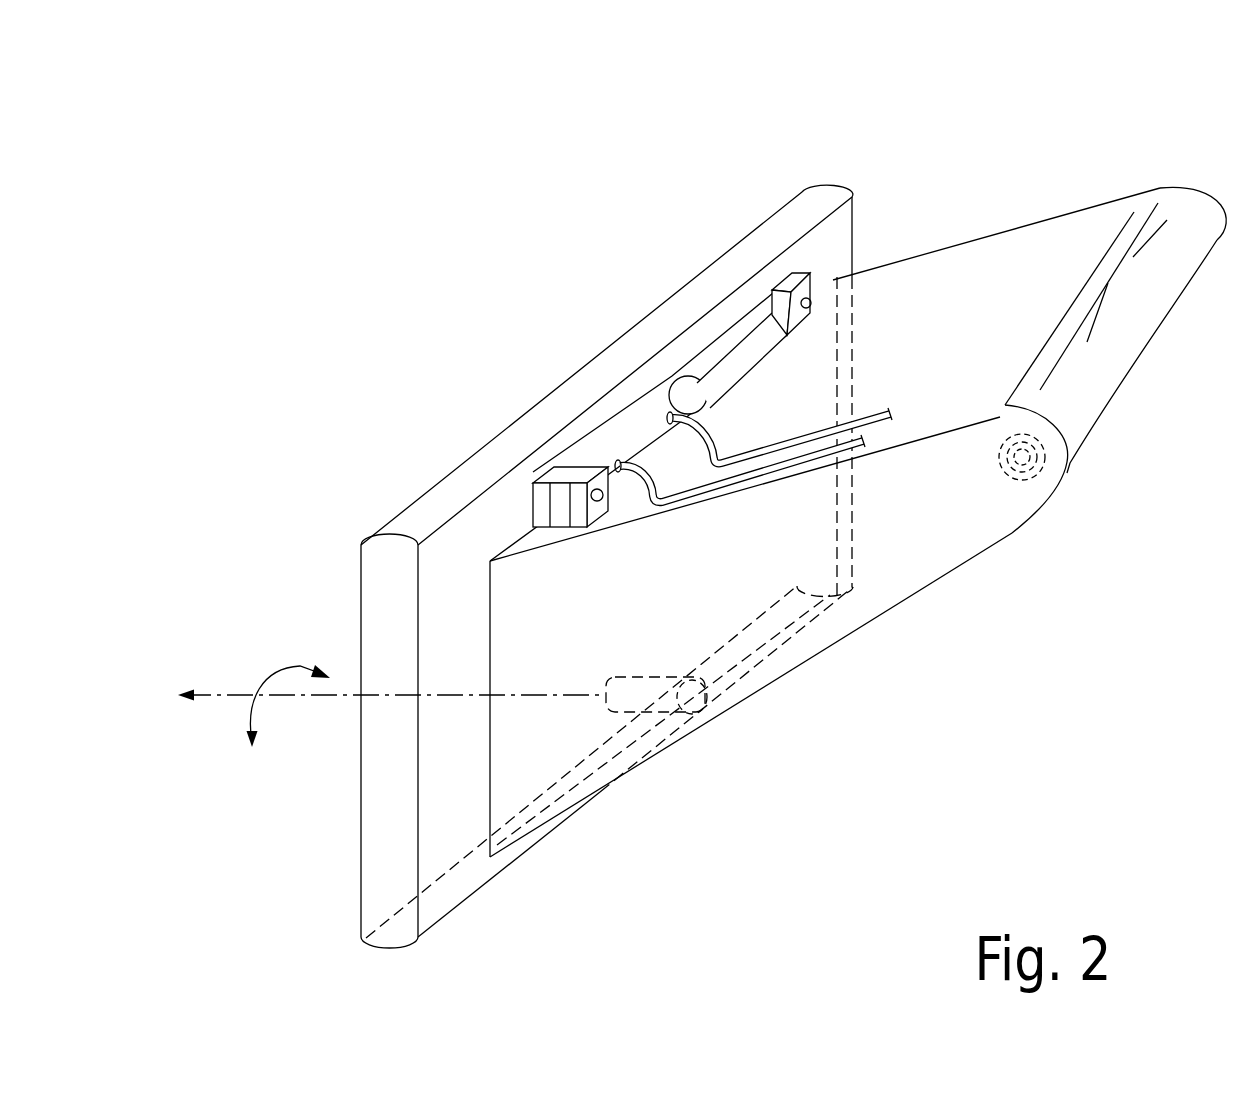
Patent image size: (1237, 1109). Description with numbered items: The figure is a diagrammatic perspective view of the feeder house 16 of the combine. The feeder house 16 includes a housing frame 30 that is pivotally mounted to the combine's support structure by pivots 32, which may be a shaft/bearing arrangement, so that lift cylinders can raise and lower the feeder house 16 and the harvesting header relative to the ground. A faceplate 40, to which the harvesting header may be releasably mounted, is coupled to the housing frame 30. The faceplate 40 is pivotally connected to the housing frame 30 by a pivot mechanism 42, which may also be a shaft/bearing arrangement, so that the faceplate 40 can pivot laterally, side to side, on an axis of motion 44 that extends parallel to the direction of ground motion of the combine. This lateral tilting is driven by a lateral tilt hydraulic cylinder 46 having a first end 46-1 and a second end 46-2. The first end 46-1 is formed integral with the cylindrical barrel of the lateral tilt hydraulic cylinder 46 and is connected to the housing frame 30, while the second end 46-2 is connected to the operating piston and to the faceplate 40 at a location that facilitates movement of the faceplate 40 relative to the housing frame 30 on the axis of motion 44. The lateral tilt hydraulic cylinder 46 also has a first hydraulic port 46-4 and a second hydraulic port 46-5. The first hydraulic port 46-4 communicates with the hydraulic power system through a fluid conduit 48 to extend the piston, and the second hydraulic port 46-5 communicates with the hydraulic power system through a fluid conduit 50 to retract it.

The feeder house 16 is at (1107, 168).
The housing frame 30 is at (648, 573).
The pivots 32 is at (1002, 490).
The faceplate 40 is at (828, 188).
The pivot mechanism 42 is at (680, 712).
The axis of motion 44 is at (226, 694).
The lateral tilt hydraulic cylinder 46 is at (600, 425).
The first end 46-1 is at (580, 458).
The second end 46-2 is at (777, 285).
The first hydraulic port 46-4 is at (621, 462).
The second hydraulic port 46-5 is at (670, 416).
The fluid conduit 48 is at (713, 493).
The fluid conduit 50 is at (793, 437).